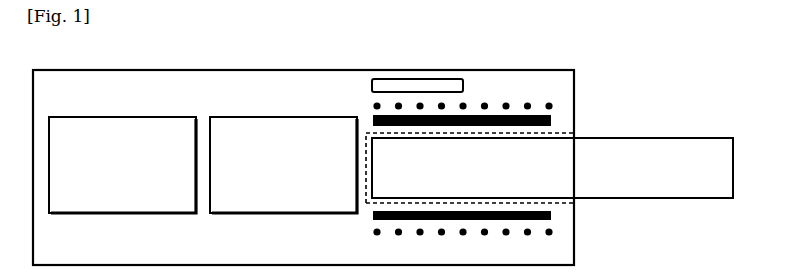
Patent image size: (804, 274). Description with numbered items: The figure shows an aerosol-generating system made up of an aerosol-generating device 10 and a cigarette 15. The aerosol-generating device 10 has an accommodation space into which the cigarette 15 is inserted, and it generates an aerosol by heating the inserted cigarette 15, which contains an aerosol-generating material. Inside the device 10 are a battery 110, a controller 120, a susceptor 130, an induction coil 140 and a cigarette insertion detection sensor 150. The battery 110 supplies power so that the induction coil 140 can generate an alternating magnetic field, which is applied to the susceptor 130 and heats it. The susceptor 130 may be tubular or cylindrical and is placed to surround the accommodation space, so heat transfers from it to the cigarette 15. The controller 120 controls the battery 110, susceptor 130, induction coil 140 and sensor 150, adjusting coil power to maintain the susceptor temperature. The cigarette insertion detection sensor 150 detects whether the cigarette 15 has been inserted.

The aerosol-generating device 10 is at (125, 70).
The cigarette 15 is at (662, 137).
The battery 110 is at (127, 117).
The controller 120 is at (287, 117).
The susceptor 130 is at (541, 114).
The induction coil 140 is at (485, 103).
The cigarette insertion detection sensor 150 is at (419, 79).